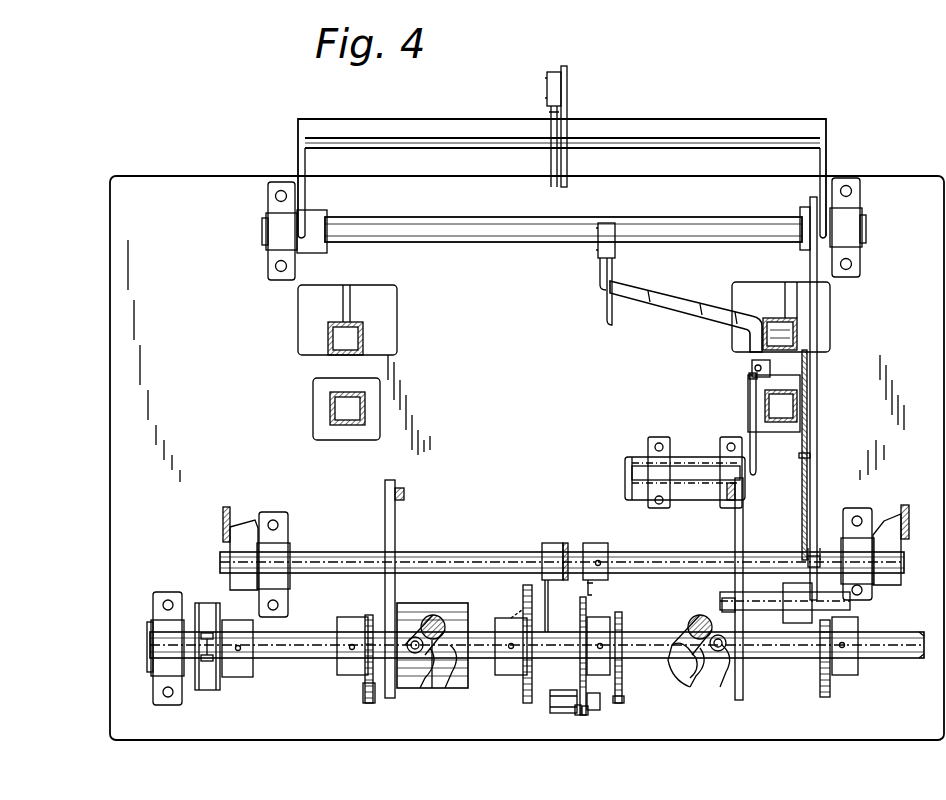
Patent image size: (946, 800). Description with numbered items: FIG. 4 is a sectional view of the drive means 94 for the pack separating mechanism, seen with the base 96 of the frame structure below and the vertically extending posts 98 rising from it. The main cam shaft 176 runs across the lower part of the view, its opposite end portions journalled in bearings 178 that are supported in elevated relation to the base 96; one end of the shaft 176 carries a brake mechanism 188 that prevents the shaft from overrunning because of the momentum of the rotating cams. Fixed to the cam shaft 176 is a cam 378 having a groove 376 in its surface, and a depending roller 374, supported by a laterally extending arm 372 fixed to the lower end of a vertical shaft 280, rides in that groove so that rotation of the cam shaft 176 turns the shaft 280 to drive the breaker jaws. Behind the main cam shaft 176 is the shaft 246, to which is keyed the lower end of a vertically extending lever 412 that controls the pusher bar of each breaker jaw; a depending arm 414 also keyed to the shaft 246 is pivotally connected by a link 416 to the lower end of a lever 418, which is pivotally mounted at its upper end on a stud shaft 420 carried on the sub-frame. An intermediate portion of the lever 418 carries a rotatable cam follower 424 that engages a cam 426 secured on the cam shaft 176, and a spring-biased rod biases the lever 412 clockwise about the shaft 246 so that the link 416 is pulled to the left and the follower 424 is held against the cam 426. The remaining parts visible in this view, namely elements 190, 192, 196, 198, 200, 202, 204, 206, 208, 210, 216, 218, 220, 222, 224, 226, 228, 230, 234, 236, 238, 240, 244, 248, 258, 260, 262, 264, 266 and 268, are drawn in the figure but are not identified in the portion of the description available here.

The drive means 94 is at (142, 643).
The base 96 is at (122, 252).
The vertically extending posts 98 is at (356, 328).
The main cam shaft 176 is at (887, 630).
The bearings 178 is at (154, 672).
The brake mechanism 188 is at (212, 692).
The gear hub 190 is at (624, 700).
The bracket 192 is at (606, 310).
The arm 196 is at (673, 300).
The guide block 198 is at (800, 333).
The rod 200 is at (748, 392).
The pivot bracket 202 is at (772, 367).
The shaft 204 is at (693, 468).
The bearing 206 is at (729, 437).
The support frame 208 is at (625, 489).
The gear 210 is at (623, 658).
The gear 216 is at (825, 697).
The bracket 218 is at (568, 168).
The upper bar frame 220 is at (636, 114).
The upper shaft 222 is at (486, 246).
The shaft bearing 224 is at (266, 215).
The vertical bar 226 is at (818, 482).
The block 228 is at (784, 590).
The shaft 230 is at (776, 611).
The collar 234 is at (818, 556).
The guide block 236 is at (808, 422).
The threaded rod 238 is at (808, 462).
The gear 240 is at (523, 590).
The collar 244 is at (546, 543).
The shaft 246 is at (455, 554).
The bearing block 248 is at (508, 622).
The bearing block 258 is at (338, 632).
The pivot pin 260 is at (403, 493).
The lever bar 262 is at (385, 522).
The collar 264 is at (722, 598).
The gear 266 is at (385, 702).
The hub 268 is at (363, 690).
The vertical shaft 280 is at (434, 615).
The laterally extending arm 372 is at (710, 641).
The depending roller 374 is at (410, 688).
The groove 376 is at (688, 690).
The cam 378 is at (462, 690).
The lever 412 is at (223, 511).
The depending arm 414 is at (592, 590).
The link 416 is at (580, 675).
The lever 418 is at (576, 716).
The stud shaft 420 is at (550, 705).
The cam follower 424 is at (588, 712).
The cam 426 is at (596, 690).